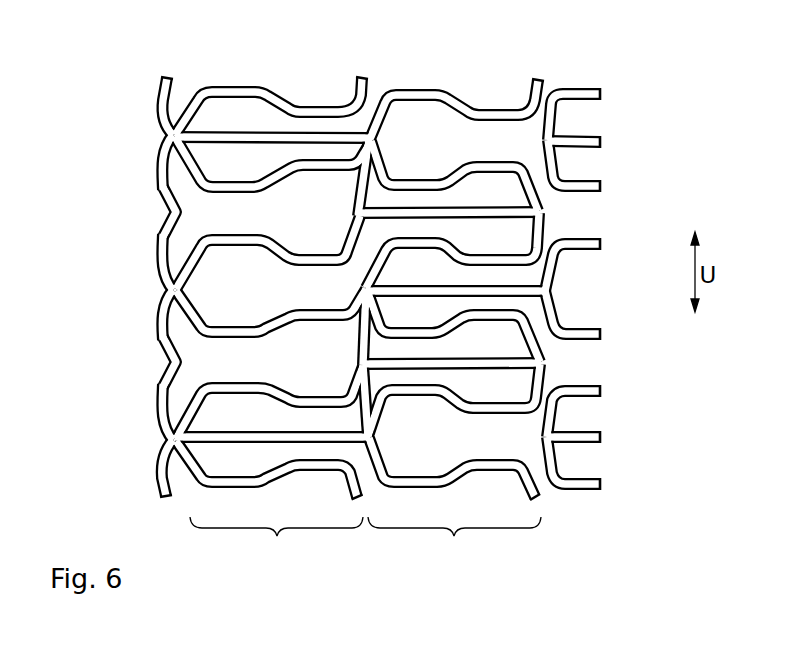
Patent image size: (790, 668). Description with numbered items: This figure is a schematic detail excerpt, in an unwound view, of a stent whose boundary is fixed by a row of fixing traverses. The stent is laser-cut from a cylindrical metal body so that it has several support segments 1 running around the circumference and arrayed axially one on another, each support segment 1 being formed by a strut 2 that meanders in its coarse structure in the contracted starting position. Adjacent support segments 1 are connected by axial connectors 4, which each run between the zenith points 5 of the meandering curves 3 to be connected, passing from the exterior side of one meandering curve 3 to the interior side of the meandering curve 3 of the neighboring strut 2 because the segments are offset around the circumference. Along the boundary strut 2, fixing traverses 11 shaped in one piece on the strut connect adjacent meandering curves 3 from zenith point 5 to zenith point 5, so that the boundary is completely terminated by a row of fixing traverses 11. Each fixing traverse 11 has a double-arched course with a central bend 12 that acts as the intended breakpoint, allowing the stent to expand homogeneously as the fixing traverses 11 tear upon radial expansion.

The support segment 1 is at (365, 541).
The strut 2 is at (433, 84).
The meandering curve 3 is at (317, 257).
The axial connector 4 is at (317, 137).
The zenith point 5 is at (365, 133).
The fixing traverse 11 is at (158, 175).
The central bend 12 is at (172, 212).